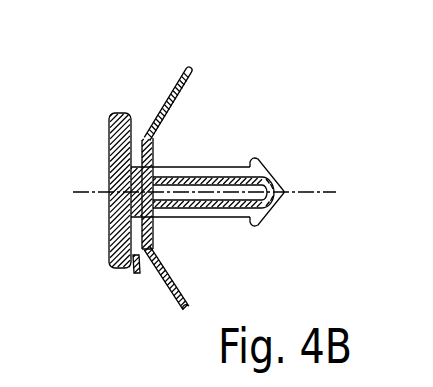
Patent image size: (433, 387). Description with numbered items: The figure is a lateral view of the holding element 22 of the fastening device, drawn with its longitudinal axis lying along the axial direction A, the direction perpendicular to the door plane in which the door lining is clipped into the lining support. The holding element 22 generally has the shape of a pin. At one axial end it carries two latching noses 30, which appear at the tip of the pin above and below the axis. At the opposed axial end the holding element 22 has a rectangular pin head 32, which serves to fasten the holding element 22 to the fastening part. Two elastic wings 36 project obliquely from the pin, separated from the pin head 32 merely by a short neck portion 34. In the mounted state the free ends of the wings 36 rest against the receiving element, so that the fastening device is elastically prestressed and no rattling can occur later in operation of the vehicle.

The holding element 22 is at (300, 79).
The latching noses 30 is at (262, 158).
The pin head 32 is at (110, 157).
The neck portion 34 is at (133, 284).
The elastic wings 36 is at (166, 102).
The axial direction A is at (323, 190).